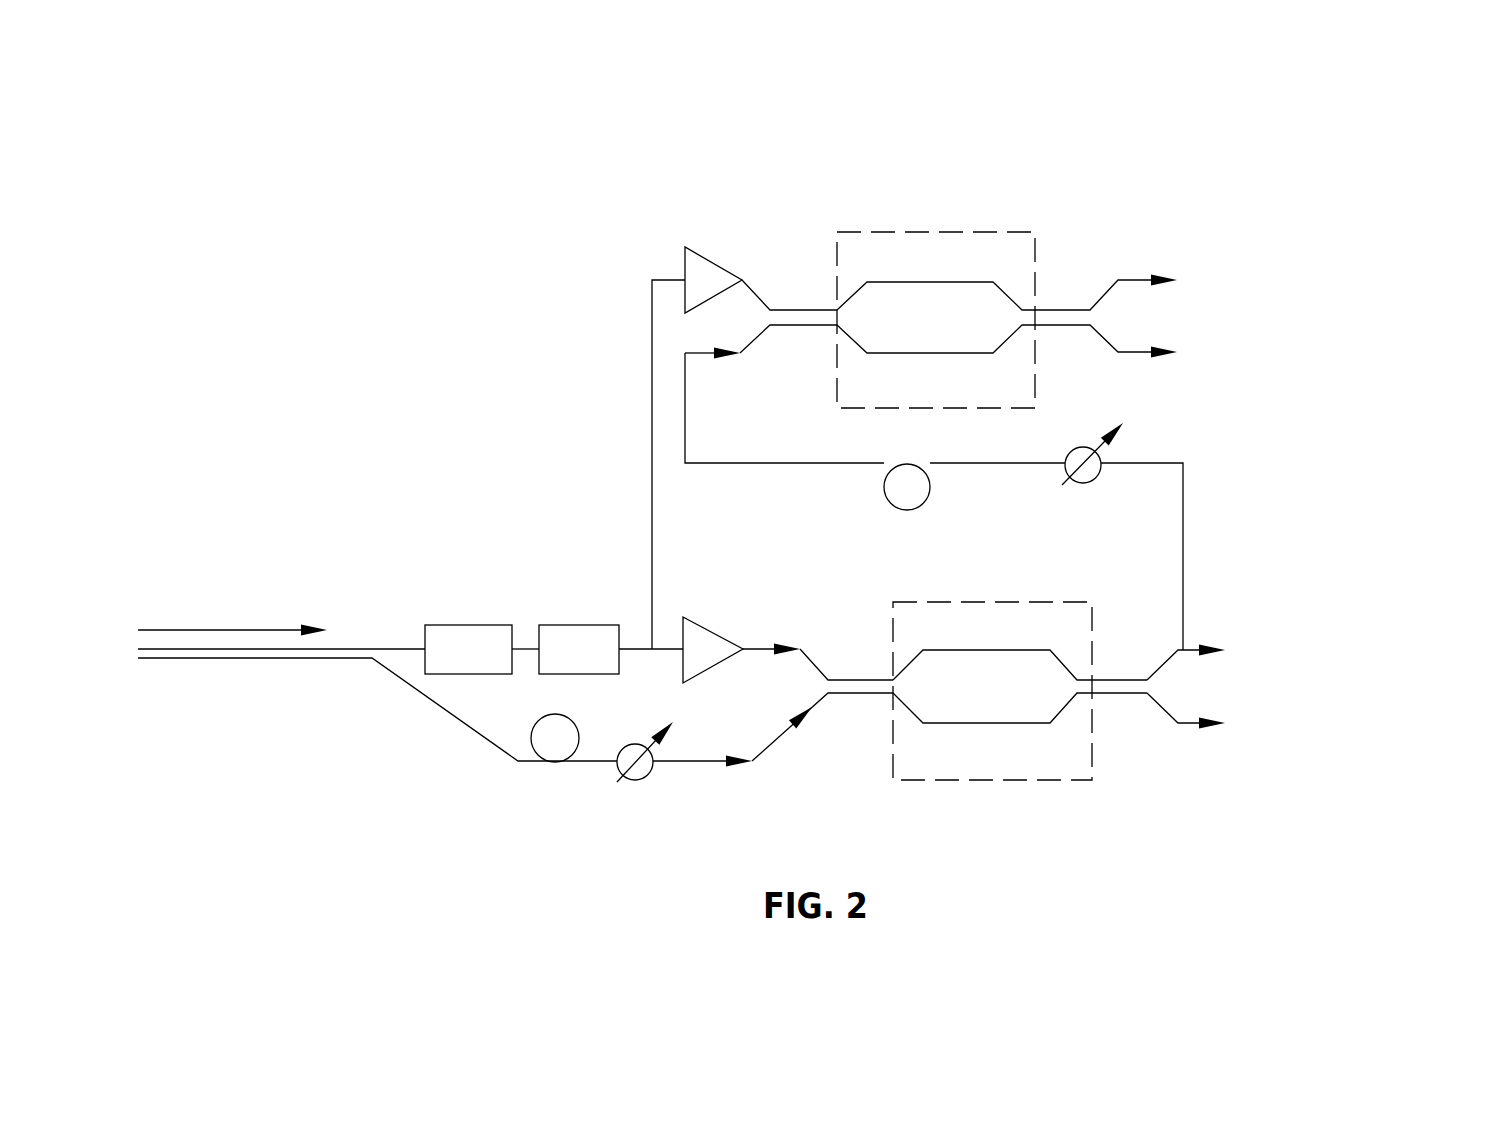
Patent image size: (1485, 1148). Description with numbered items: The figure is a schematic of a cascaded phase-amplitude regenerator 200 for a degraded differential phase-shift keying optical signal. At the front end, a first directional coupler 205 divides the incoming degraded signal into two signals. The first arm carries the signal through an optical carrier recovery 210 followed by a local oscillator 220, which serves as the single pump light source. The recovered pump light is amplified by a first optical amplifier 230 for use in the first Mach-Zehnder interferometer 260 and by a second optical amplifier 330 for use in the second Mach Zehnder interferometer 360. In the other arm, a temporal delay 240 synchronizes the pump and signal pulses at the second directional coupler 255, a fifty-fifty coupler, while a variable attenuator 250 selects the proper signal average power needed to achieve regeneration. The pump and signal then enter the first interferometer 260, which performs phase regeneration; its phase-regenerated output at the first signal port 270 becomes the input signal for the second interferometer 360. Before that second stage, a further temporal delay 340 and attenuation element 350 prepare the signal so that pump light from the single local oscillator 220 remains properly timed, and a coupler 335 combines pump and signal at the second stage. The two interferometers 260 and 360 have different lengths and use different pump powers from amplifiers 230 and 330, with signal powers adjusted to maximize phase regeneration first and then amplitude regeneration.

The cascaded phase-amplitude regenerator 200 is at (660, 465).
The first directional coupler 205 is at (377, 719).
The optical carrier recovery 210 is at (435, 617).
The local oscillator 220 is at (545, 617).
The first optical amplifier 230 is at (759, 625).
The temporal delay 240 is at (490, 768).
The variable attenuator 250 is at (690, 774).
The second directional coupler 255 is at (867, 757).
The Mach-Zehnder interferometer 260 is at (1027, 733).
The first signal port 270 is at (1293, 609).
The second optical amplifier 330 is at (650, 240).
The 50:50 coupler (upper stage input) 335 is at (758, 268).
The temporal delay 340 is at (856, 500).
The phase shifter (upper stage) 350 is at (1033, 478).
The second Mach Zehnder interferometer 360 is at (1138, 265).